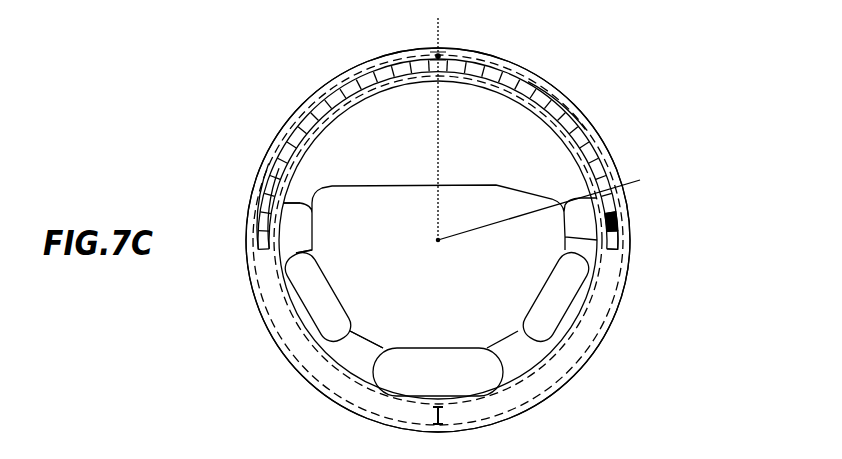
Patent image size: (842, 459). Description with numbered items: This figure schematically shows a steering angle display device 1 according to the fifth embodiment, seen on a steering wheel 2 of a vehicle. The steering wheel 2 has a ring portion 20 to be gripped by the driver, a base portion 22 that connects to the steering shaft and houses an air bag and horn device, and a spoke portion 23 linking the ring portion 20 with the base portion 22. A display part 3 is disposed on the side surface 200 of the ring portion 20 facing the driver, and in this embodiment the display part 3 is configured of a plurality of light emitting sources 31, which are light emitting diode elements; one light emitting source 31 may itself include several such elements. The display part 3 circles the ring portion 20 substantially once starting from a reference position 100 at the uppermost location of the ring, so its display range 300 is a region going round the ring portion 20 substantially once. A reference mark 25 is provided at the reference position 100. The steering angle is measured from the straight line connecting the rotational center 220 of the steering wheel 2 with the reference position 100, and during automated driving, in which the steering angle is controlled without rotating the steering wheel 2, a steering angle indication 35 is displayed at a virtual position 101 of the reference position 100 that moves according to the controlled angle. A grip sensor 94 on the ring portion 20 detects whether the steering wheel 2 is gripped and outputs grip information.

The steering angle display device 1 is at (735, 53).
The steering wheel 2 is at (605, 138).
The display part 3 is at (270, 183).
The ring portion 20 is at (615, 163).
The base portion 22 is at (520, 280).
The spoke portion 23 is at (298, 230).
The reference mark 25 is at (437, 57).
The light emitting sources 31 is at (542, 93).
The steering angle indication 35 is at (624, 235).
The grip sensor 94 is at (600, 333).
The reference position 100 is at (437, 54).
The virtual position 101 is at (438, 240).
The side surface 200 is at (628, 263).
The rotational center 220 is at (560, 201).
The display range 300 is at (333, 97).